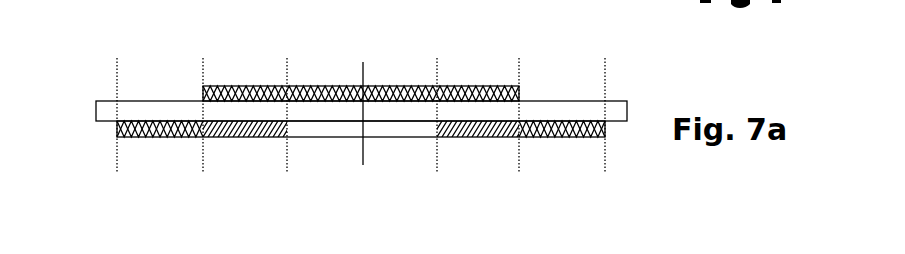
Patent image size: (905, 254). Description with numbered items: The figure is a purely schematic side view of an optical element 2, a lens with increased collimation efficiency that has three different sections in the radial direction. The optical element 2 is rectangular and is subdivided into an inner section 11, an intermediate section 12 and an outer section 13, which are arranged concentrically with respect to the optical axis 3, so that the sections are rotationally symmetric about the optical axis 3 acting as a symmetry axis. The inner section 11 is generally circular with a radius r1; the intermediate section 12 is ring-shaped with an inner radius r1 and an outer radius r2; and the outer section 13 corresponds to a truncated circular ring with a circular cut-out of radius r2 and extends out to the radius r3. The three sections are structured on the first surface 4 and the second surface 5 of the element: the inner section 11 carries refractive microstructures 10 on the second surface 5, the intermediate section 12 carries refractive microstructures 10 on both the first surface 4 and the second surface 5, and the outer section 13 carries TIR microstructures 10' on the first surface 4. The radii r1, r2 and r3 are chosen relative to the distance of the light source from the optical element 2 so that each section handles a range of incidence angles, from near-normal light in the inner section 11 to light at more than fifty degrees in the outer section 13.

The optical element 2 is at (83, 79).
The optical axis 3 is at (363, 64).
The first surface 4 is at (113, 125).
The second surface 5 is at (131, 100).
The refractive microstructures 10 is at (356, 118).
The TIR microstructures 10' is at (158, 178).
The inner section 11 is at (381, 134).
The intermediate section 12 is at (488, 141).
The outer section 13 is at (569, 141).
The radius of inner section r1 is at (437, 64).
The outer radius of intermediate section r2 is at (519, 64).
The outer radius r3 is at (605, 66).